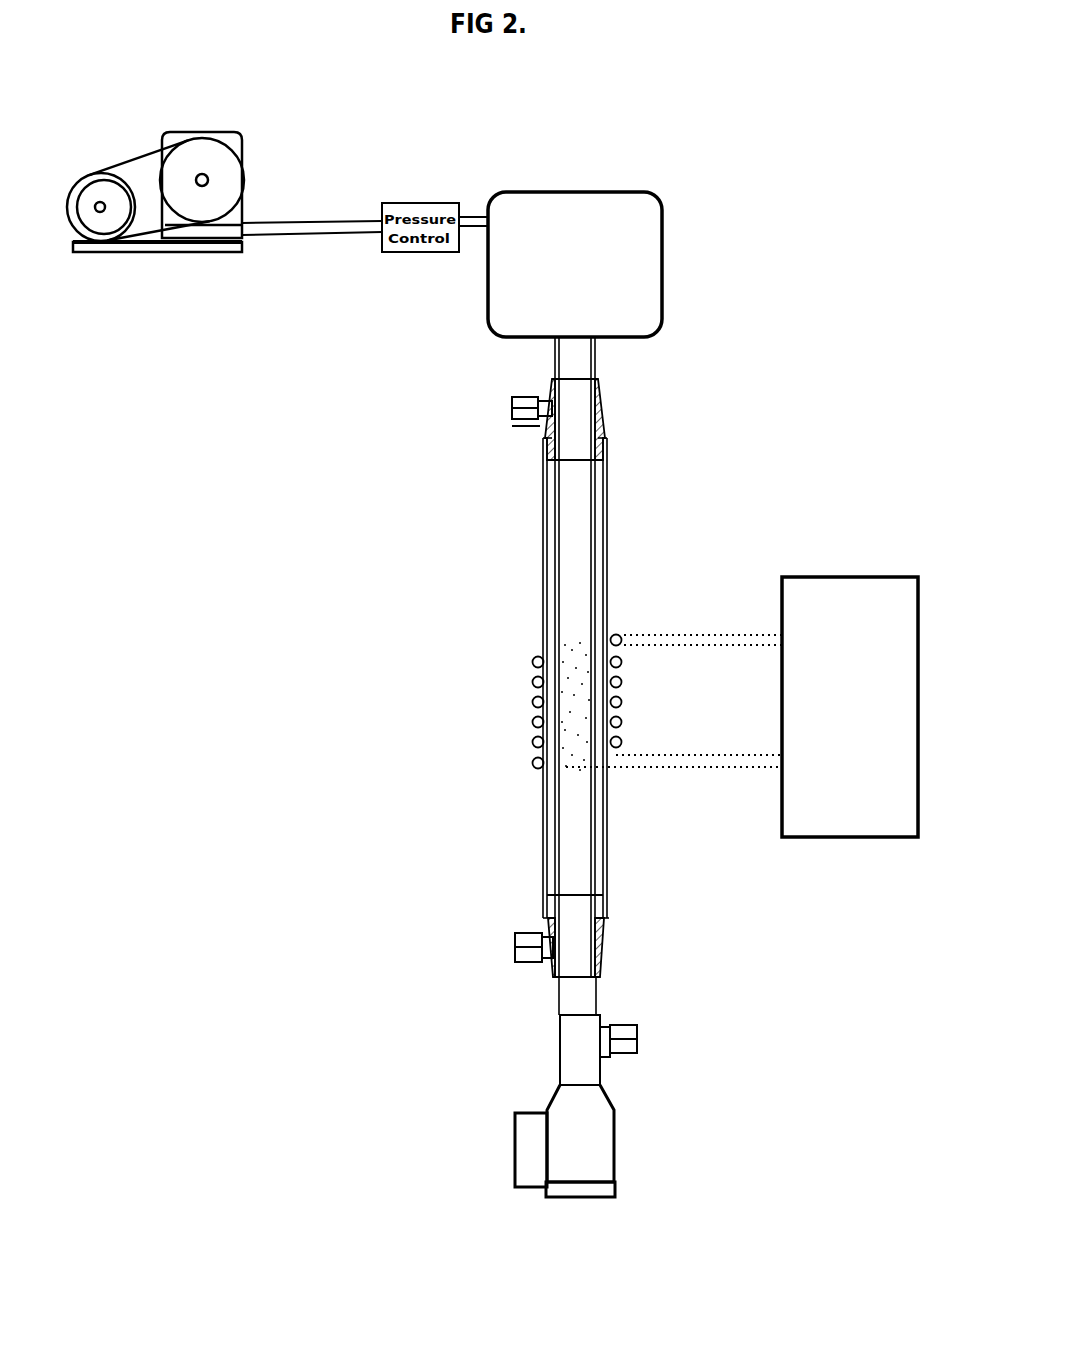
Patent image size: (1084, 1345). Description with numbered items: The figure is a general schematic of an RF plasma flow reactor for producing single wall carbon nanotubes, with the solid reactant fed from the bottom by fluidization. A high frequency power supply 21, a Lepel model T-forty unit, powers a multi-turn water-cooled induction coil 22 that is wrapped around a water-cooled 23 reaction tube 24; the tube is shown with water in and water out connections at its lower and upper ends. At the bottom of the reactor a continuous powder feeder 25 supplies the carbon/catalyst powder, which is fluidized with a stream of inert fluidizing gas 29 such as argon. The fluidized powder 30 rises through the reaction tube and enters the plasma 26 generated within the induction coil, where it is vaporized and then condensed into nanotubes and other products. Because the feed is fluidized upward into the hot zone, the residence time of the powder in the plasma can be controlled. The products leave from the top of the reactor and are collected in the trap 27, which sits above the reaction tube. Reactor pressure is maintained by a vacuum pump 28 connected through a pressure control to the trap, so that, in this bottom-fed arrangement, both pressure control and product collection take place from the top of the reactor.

The high frequency power supply 21 is at (742, 707).
The induction coil 22 is at (514, 747).
The water cooling 23 is at (490, 409).
The reaction tube 24 is at (576, 678).
The continuous powder feeder 25 is at (430, 1158).
The plasma 26 is at (576, 706).
The trap 27 is at (575, 264).
The vacuum pump 28 is at (155, 223).
The inert fluidizing gas 29 is at (648, 1038).
The fluidized powder 30 is at (590, 893).